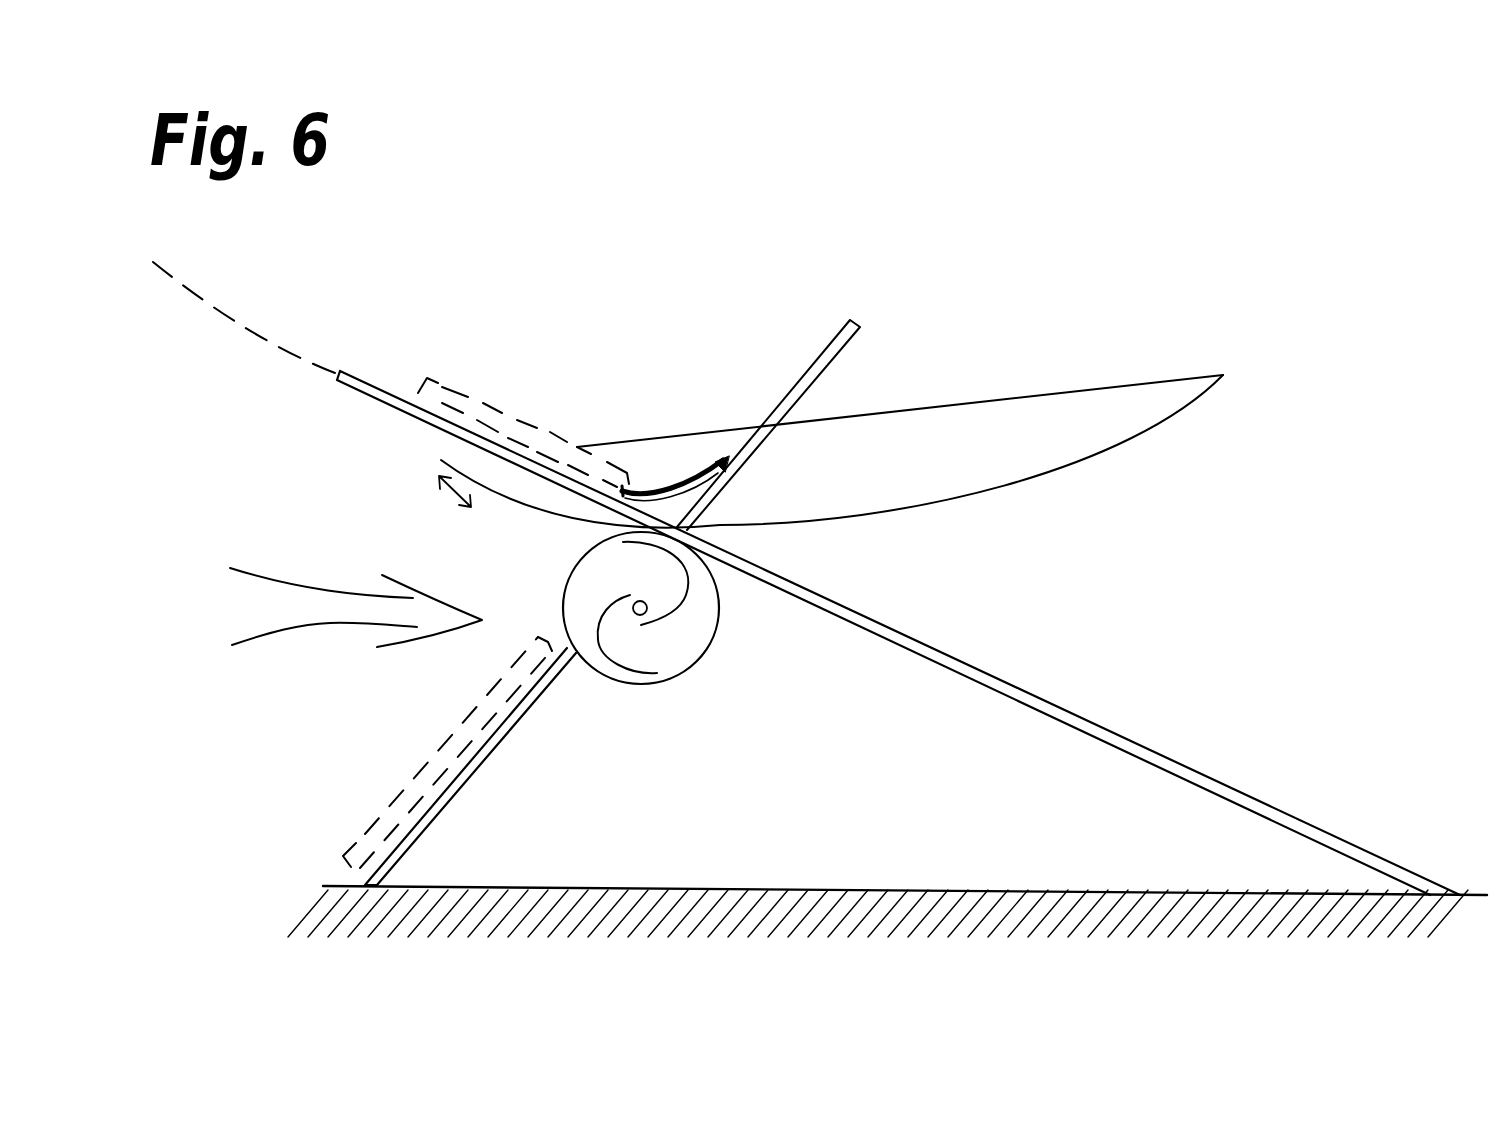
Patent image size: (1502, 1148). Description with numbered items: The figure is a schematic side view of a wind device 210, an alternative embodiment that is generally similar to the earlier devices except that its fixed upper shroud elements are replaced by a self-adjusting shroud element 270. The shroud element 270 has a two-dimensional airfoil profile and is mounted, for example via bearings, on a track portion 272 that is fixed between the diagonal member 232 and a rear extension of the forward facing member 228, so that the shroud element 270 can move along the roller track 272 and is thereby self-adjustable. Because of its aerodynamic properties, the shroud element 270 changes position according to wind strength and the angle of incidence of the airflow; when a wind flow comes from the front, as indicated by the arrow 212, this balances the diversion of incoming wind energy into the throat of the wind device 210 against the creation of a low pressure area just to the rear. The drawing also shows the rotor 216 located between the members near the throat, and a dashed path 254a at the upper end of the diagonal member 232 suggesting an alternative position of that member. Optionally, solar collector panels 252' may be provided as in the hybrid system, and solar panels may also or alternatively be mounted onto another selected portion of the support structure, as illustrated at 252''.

The wind device 210 is at (1066, 332).
The arrow 212 is at (333, 610).
The rotor 216 is at (690, 668).
The forward facing member 228 is at (467, 793).
The diagonal member 232 is at (990, 672).
The solar collector panels 252' is at (386, 752).
The solar panels 252'' is at (523, 403).
The path of boom end 254a is at (203, 298).
The shroud element 270 is at (967, 481).
The track portion 272 is at (641, 490).